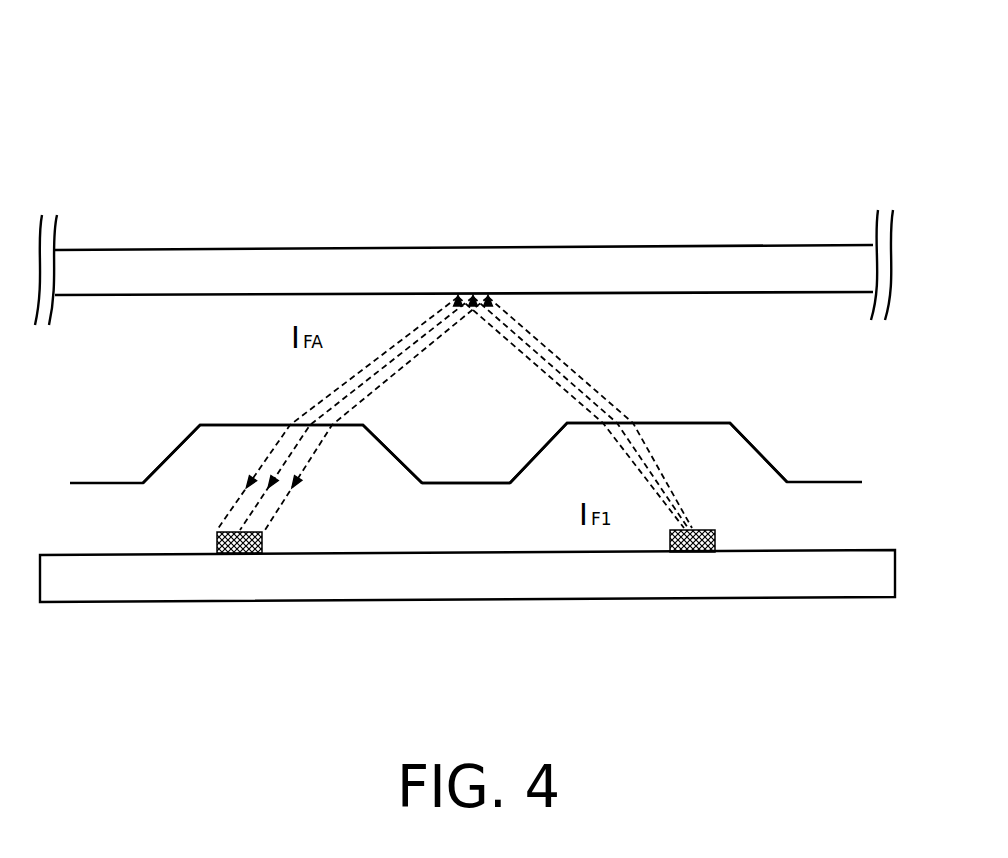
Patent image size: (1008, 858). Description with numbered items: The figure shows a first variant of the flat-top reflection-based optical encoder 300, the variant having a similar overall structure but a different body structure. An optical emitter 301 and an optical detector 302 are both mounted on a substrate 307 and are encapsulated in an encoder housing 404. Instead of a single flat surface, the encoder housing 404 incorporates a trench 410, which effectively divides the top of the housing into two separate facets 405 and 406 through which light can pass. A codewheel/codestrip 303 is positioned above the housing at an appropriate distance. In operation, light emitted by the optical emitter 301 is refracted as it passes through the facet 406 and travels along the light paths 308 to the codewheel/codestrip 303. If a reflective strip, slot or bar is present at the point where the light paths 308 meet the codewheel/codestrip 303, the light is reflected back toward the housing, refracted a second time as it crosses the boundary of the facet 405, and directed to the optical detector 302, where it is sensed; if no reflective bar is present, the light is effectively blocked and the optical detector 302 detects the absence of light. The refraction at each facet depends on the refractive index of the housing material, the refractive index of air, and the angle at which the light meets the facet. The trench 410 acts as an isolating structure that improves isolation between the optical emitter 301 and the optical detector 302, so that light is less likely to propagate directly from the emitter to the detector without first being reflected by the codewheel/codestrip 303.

The reflection-based optical encoder 300 is at (668, 207).
The optical emitter 301 is at (718, 532).
The optical detector 302 is at (205, 543).
The codewheel/codestrip 303 is at (741, 279).
The substrate 307 is at (150, 605).
The light paths 308 is at (592, 355).
The encoder housing 404 is at (381, 527).
The facet 405 is at (700, 422).
The facet 406 is at (240, 425).
The trench 410 is at (465, 465).